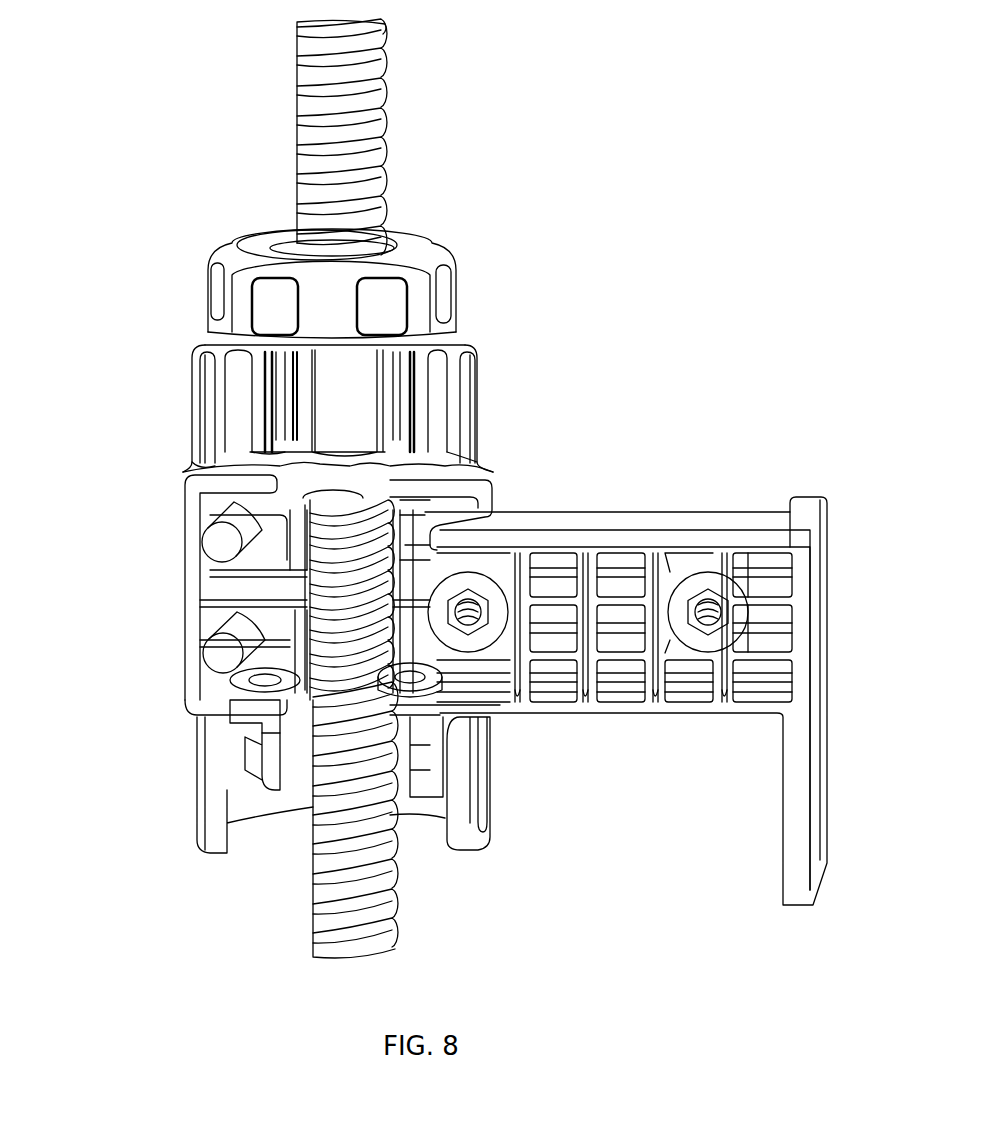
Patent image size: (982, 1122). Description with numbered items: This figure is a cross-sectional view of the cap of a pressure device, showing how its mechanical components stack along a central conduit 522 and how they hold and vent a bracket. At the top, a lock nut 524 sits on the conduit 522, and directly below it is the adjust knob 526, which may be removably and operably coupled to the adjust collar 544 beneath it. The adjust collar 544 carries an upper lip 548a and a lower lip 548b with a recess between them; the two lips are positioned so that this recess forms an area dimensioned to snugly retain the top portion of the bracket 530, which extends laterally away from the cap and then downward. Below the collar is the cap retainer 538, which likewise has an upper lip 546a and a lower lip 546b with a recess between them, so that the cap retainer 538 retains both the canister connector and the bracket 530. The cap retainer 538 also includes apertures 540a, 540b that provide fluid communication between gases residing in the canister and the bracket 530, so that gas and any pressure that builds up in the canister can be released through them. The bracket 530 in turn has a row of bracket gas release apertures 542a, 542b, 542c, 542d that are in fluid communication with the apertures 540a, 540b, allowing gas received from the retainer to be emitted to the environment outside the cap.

The conduit 522 is at (385, 152).
The lock nut 524 is at (435, 243).
The adjust collar 544 is at (328, 393).
The adjust knob 526 is at (477, 397).
The bracket 530 is at (580, 510).
The upper lip 548a is at (252, 460).
The lower lip 548b is at (252, 498).
The aperture 540a is at (240, 677).
The aperture 540b is at (393, 695).
The upper lip 546a is at (237, 700).
The lower lip 546b is at (238, 737).
The cap retainer 538 is at (230, 787).
The bracket gas release aperture 542a is at (520, 697).
The bracket gas release aperture 542b is at (590, 697).
The bracket gas release aperture 542c is at (667, 697).
The bracket gas release aperture 542d is at (728, 697).